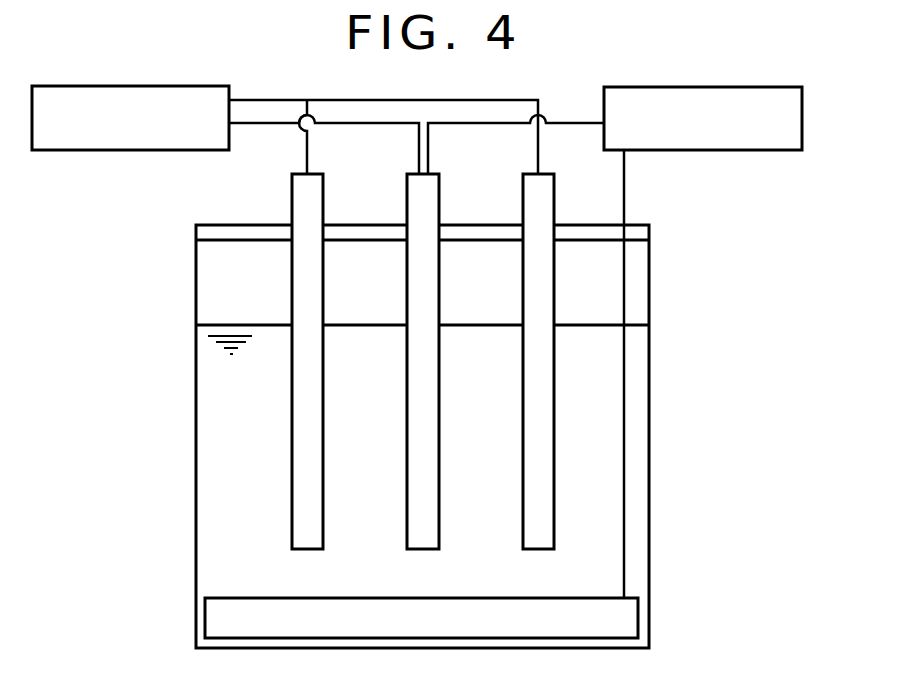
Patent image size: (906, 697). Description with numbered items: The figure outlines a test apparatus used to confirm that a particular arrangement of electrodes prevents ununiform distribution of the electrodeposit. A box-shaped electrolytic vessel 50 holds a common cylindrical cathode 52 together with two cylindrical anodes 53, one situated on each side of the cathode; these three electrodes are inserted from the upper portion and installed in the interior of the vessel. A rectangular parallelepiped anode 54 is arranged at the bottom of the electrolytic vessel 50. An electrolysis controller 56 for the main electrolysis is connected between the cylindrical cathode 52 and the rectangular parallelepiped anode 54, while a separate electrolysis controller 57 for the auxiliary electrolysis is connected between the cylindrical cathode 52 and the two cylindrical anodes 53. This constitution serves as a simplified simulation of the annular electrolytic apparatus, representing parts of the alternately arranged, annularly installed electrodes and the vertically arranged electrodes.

The electrolytic vessel 50 is at (193, 406).
The common cylindrical cathode 52 is at (432, 200).
The cylindrical anodes 53 is at (297, 197).
The rectangular parallelepiped anode 54 is at (627, 616).
The electrolysis controller for the main electrolysis 56 is at (713, 151).
The electrolysis controller for the auxiliary electrolysis 57 is at (121, 151).